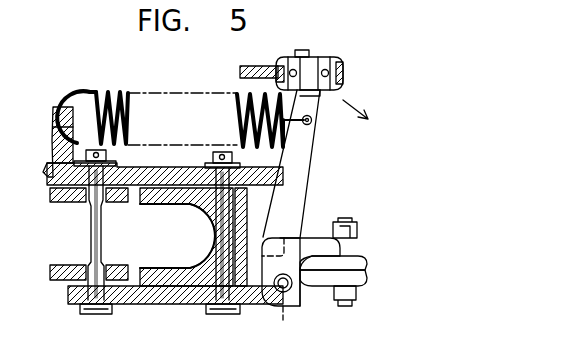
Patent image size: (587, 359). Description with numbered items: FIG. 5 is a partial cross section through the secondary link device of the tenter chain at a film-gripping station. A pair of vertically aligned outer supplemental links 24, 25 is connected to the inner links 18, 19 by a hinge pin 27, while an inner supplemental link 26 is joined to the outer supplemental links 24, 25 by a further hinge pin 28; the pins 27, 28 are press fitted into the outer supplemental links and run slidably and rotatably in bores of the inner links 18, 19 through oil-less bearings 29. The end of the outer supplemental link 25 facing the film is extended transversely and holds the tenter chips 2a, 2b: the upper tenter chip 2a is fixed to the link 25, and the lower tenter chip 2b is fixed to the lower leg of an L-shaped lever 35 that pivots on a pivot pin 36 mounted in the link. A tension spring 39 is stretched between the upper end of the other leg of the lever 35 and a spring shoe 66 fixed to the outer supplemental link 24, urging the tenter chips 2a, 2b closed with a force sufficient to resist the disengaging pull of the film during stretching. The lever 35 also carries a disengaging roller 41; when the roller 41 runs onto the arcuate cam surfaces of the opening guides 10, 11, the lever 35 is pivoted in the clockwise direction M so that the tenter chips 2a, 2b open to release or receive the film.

The upper tenter chip 2a is at (367, 262).
The lower tenter chip 2b is at (367, 280).
The opening guide 10 is at (253, 61).
The opening guide 11 is at (278, 66).
The inner link 18 is at (50, 197).
The inner link 19 is at (68, 265).
The outer supplemental link 24 is at (184, 172).
The outer supplemental link 25 is at (301, 288).
The inner supplemental link 26 is at (158, 304).
The hinge pin 27 is at (96, 314).
The hinge pin 28 is at (206, 312).
The oil-less bearing 29 is at (199, 224).
The L-shaped lever 35 is at (310, 171).
The pivot pin 36 is at (292, 292).
The tension spring 39 is at (116, 92).
The disengaging roller 41 is at (343, 72).
The spring shoe 66 is at (50, 133).
The clockwise direction M is at (367, 117).